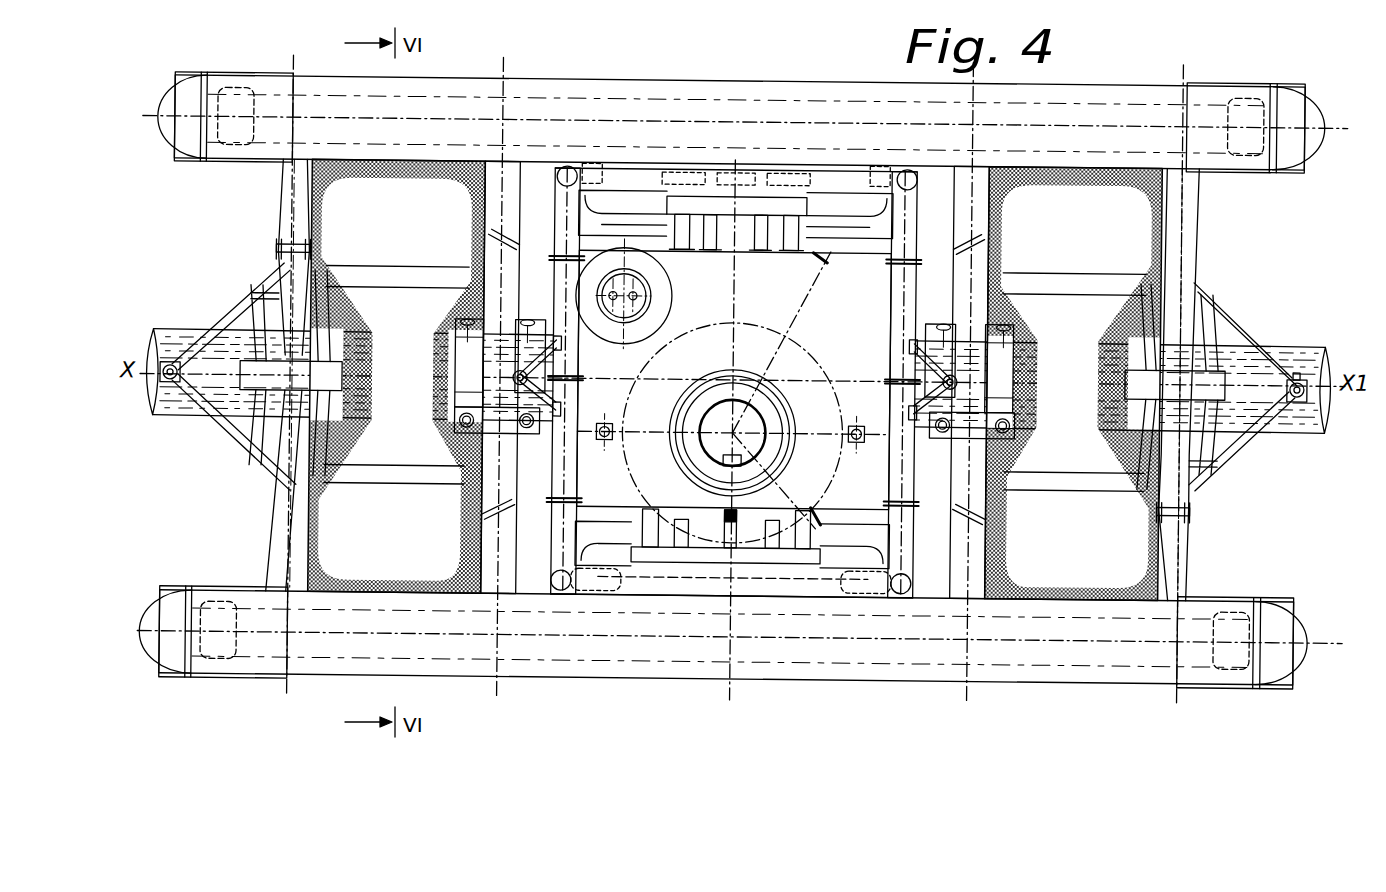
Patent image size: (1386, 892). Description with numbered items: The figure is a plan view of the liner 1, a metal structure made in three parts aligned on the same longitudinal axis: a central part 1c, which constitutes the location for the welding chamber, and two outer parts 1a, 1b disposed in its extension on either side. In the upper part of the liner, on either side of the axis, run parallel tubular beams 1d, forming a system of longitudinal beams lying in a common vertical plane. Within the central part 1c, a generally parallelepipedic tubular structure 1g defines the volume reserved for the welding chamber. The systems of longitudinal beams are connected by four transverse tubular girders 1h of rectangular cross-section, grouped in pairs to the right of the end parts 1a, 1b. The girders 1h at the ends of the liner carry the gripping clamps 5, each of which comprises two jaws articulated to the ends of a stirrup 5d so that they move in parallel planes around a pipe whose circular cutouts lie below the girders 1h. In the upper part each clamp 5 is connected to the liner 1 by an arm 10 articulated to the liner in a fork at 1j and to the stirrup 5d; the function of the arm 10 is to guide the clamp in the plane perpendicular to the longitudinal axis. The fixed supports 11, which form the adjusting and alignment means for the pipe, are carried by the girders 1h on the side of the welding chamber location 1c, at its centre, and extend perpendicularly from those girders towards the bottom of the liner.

The liner 1 is at (1257, 305).
The liner end part 1a is at (420, 190).
The liner end part 1b is at (1082, 253).
The central part 1c is at (855, 311).
The tubular beam 1d is at (636, 104).
The parallelepipedic tubular structure 1g is at (892, 322).
The transverse tubular girder 1h is at (300, 217).
The fork 1j is at (278, 252).
The clamp 5 is at (228, 308).
The stirrup 5d is at (258, 432).
The arm 10 is at (292, 297).
The fixed support 11 is at (523, 314).